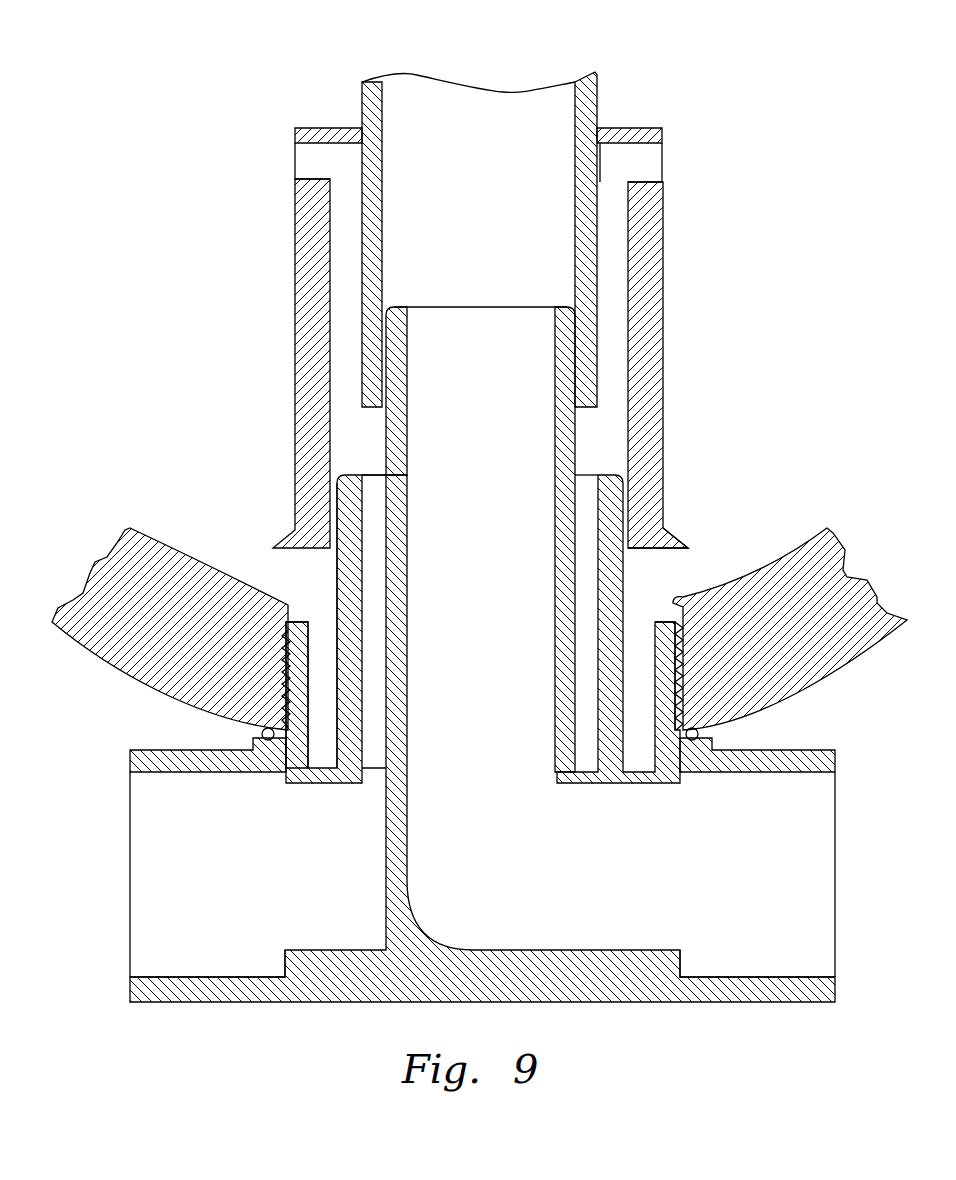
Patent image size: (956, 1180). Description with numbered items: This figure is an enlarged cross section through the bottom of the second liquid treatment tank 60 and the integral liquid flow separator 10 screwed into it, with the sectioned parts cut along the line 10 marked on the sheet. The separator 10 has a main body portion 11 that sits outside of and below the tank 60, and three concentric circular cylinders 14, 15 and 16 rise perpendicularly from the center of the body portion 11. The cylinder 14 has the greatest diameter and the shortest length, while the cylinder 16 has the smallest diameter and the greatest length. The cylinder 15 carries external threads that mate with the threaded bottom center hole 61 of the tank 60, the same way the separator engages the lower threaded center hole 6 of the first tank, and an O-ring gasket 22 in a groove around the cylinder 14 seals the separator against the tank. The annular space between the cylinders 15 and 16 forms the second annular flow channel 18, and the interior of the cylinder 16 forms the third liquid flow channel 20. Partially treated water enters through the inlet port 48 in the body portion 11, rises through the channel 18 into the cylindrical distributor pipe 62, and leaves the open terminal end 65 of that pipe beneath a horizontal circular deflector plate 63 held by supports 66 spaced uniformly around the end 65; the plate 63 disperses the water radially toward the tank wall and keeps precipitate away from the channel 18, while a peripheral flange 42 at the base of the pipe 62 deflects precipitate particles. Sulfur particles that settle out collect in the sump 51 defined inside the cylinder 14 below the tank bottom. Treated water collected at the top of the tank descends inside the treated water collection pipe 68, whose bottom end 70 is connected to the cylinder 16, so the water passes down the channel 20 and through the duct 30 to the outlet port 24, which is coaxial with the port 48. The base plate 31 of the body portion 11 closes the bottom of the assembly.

The lower threaded center hole 6 is at (673, 600).
The integral liquid flow separator 10 is at (288, 263).
The main body portion 11 is at (780, 750).
The cylinder 14 is at (668, 620).
The cylinder 15 is at (337, 568).
The cylinder 16 is at (387, 870).
The second annular flow channel 18 is at (375, 755).
The third liquid flow channel 20 is at (502, 377).
The O-ring gasket 22 is at (262, 732).
The outlet port 24 is at (835, 760).
The duct 30 is at (768, 977).
The base 31 is at (223, 977).
The peripheral flange 42 is at (672, 547).
The inlet port 48 is at (130, 760).
The sump 51 is at (318, 622).
The second liquid treatment tank 60 is at (70, 600).
The bottom center hole 61 is at (288, 657).
The cylindrical distributor pipe 62 is at (312, 328).
The deflector plate 63 is at (308, 128).
The open terminal end 65 is at (348, 475).
The supports 66 is at (295, 162).
The treated water collection pipe 68 is at (595, 80).
The bottom end 70 is at (583, 408).